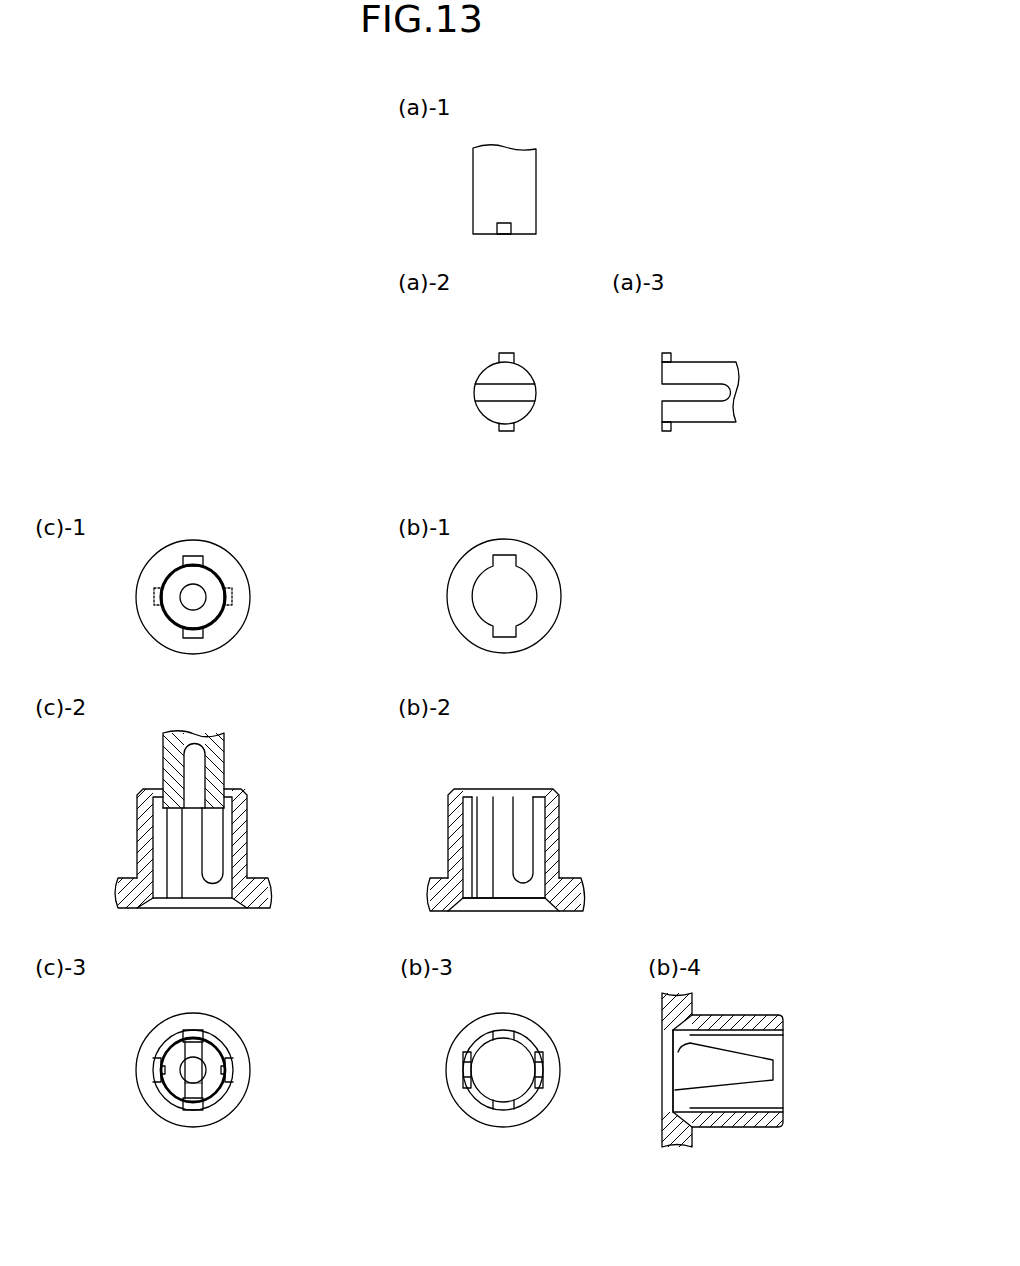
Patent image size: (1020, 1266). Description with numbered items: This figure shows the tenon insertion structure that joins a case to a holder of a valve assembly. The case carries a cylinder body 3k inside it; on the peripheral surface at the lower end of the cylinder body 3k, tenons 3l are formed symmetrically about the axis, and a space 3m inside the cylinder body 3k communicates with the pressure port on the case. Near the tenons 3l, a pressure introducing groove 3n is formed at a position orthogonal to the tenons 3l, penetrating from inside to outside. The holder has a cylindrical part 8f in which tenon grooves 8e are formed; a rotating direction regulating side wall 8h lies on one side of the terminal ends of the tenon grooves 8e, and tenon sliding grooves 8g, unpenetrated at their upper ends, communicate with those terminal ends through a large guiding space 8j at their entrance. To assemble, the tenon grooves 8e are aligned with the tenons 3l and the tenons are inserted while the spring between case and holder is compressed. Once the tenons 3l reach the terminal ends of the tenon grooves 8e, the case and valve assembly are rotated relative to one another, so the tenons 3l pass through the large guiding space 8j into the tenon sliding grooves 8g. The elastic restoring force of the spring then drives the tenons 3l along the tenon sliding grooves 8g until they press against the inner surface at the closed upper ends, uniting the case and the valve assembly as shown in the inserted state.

The cylinder body 3k is at (527, 167).
The tenons 3l is at (512, 228).
The space 3m is at (188, 1078).
The pressure introducing groove 3n is at (484, 395).
The tenon grooves 8e is at (192, 558).
The cylindrical part 8f is at (225, 563).
The tenon sliding grooves 8g is at (227, 832).
The rotating direction regulating side wall 8h is at (490, 888).
The large guiding space 8j is at (697, 1057).